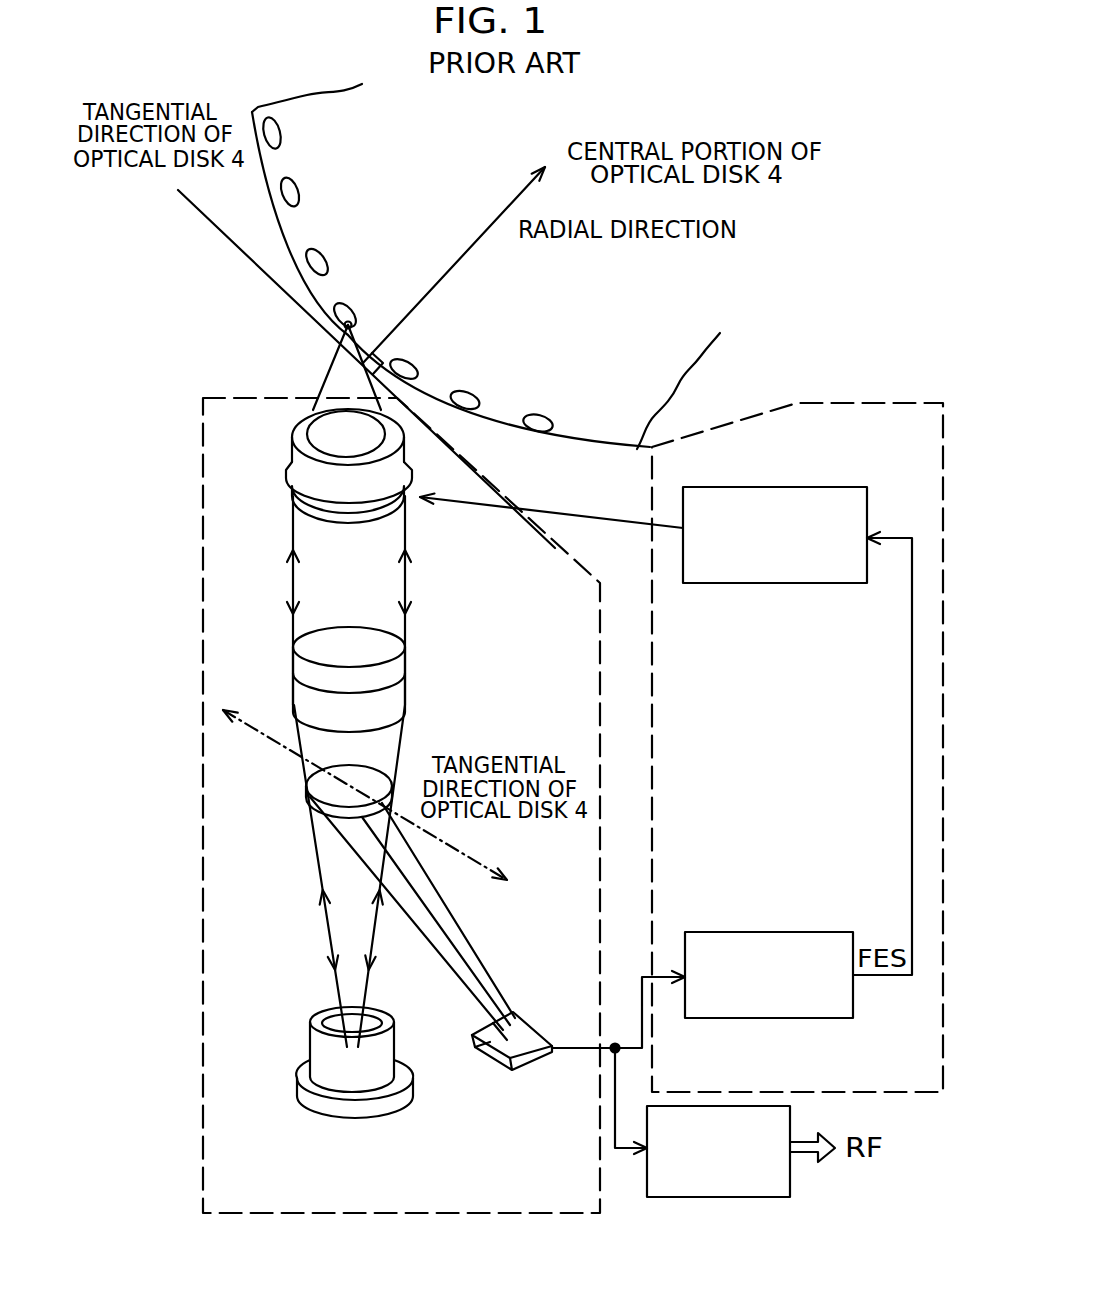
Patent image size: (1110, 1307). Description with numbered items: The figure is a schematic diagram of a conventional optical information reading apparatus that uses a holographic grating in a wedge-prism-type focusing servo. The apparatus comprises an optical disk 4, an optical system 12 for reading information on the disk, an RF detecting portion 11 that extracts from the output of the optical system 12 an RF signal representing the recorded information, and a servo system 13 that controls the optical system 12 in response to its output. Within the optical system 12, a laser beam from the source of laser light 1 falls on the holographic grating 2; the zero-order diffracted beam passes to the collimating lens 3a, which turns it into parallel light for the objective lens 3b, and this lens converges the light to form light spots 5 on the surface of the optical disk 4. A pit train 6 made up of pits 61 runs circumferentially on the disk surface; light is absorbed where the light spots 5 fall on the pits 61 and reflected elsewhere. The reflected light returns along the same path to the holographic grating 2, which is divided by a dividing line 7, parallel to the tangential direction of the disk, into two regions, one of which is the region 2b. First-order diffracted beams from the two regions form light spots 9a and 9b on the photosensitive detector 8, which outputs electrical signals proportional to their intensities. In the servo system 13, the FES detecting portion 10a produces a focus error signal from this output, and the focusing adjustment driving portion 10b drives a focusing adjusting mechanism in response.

The source of laser light 1 is at (323, 1063).
The holographic grating 2 is at (310, 777).
The region of holographic grating 2b is at (308, 790).
The collimating lens 3a is at (310, 688).
The objective lens 3b is at (307, 467).
The optical disk 4 is at (700, 357).
The light spots 5 is at (340, 322).
The pit train 6 is at (298, 232).
The pits 61 is at (325, 262).
The dividing line 7 is at (325, 747).
The photosensitive detector 8 is at (543, 1035).
The light spot 9a is at (518, 1027).
The light spot 9b is at (492, 1055).
The FES detecting portion 10a is at (793, 932).
The focusing adjustment driving portion 10b is at (785, 585).
The RF detecting portion 11 is at (700, 1198).
The optical system 12 is at (233, 968).
The servo system 13 is at (875, 440).